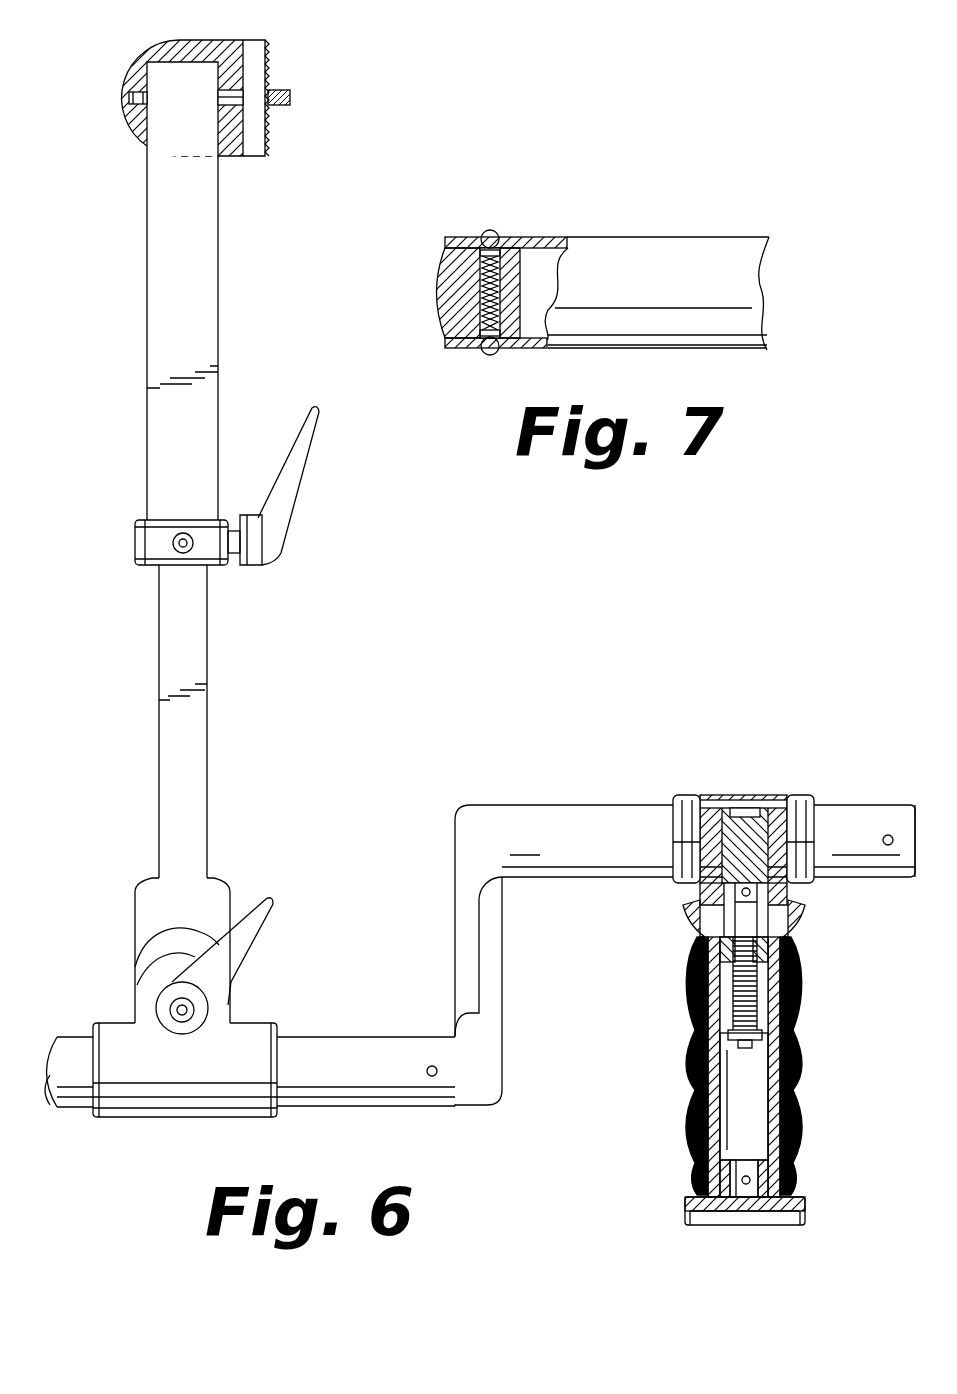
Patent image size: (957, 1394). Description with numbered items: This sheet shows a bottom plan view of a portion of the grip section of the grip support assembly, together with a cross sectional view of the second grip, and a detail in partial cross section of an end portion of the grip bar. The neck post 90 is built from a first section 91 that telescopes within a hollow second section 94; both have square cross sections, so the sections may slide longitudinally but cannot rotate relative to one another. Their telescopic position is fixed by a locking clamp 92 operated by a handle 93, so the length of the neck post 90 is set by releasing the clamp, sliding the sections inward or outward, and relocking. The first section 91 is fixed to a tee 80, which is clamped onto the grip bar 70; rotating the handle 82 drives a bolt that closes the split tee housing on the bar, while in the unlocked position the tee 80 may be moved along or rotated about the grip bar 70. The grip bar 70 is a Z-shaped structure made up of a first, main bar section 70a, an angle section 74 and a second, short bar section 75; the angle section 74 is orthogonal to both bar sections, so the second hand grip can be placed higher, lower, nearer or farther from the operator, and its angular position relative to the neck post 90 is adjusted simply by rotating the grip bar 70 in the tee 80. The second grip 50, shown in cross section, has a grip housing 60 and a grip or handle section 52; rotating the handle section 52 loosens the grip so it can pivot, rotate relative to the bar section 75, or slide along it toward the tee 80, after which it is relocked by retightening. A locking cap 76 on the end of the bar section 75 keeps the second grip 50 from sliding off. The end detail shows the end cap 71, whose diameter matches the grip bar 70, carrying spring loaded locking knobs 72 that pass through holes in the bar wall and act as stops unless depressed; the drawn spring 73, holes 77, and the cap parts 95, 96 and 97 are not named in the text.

In FIG. 6, the second (right) grip 50 is at (812, 898).
In FIG. 6, the grip or handle section 52 is at (802, 1005).
In FIG. 6, the second grip housing 60 is at (806, 800).
In FIG. 6, the grip bar 70 is at (77, 1106).
In FIG. 7, the grip bar 70 is at (674, 246).
In FIG. 6, the first (main) bar section 70a is at (345, 1087).
In FIG. 7, the left end cap 71 is at (440, 312).
In FIG. 7, the spring loaded locking knobs 72 is at (487, 230).
In FIG. 7, the spring 73 is at (522, 258).
In FIG. 6, the angle section 74 is at (463, 973).
In FIG. 6, the second (short) bar section 75 is at (605, 825).
In FIG. 6, the locking cap 76 is at (920, 812).
In FIG. 6, the hole 77 is at (885, 833).
In FIG. 6, the tee 80 is at (148, 1090).
In FIG. 6, the handle 82 is at (250, 930).
In FIG. 6, the neck post 90 is at (141, 579).
In FIG. 6, the first section of the neck post 91 is at (182, 704).
In FIG. 6, the locking clamp 92 is at (213, 557).
In FIG. 6, the handle 93 is at (290, 497).
In FIG. 6, the second section of the neck post 94 is at (200, 313).
In FIG. 6, the cap 95 is at (145, 63).
In FIG. 6, the threaded block 96 is at (270, 55).
In FIG. 6, the set screw 97 is at (281, 108).